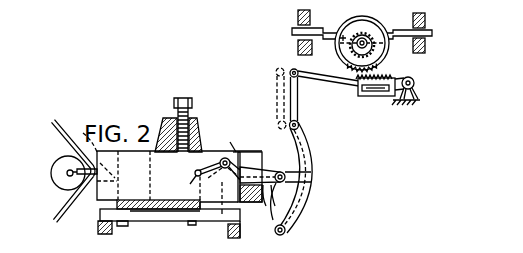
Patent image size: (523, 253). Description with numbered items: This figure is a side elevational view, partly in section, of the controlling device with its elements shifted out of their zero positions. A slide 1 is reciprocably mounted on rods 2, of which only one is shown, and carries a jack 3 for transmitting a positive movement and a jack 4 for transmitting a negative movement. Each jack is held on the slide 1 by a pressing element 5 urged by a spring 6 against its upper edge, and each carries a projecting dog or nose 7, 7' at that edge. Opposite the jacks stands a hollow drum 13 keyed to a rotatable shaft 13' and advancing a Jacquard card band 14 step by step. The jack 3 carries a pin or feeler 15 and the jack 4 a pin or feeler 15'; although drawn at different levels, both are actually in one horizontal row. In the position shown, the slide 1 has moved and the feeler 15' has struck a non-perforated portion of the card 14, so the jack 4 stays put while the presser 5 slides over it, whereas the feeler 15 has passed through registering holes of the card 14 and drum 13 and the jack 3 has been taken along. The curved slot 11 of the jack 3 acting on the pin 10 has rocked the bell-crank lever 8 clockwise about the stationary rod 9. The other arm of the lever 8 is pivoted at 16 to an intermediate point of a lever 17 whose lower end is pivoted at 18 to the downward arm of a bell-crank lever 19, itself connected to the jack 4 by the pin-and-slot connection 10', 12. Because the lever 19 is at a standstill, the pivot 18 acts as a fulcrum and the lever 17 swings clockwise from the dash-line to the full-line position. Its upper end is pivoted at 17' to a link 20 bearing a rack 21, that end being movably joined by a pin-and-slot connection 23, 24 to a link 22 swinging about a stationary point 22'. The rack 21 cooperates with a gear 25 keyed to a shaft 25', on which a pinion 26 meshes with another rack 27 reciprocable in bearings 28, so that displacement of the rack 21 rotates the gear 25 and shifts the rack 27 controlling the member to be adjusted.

The slide 1 is at (147, 216).
The rod 2 is at (135, 222).
The jack 3 is at (112, 155).
The jack 4 is at (247, 151).
The pressing element 5 is at (156, 144).
The spring 6 is at (172, 132).
The dog or nose 7 is at (219, 142).
The dog or nose 7' is at (232, 126).
The bell-crank lever 8 is at (251, 162).
The rod 9 is at (300, 178).
The pin 10 is at (241, 132).
The pin 10' is at (209, 226).
The curved slot 11 is at (199, 176).
The curved slot 12 is at (264, 206).
The hollow drum 13 is at (54, 173).
The rotatable shaft 13' is at (60, 160).
The Jacquard card band 14 is at (58, 130).
The pin or feeler 15 is at (64, 198).
The pin or feeler 15' is at (81, 135).
The pivot 16 is at (299, 126).
The lever 17 is at (302, 150).
The pivot 17' is at (277, 59).
The pivot 18 is at (286, 231).
The bell-crank lever 19 is at (274, 214).
The link 20 is at (328, 80).
The rack 21 is at (386, 78).
The link 22 is at (418, 99).
The stationary point 22' is at (430, 87).
The pin-and-slot connection 23 is at (370, 92).
The pin-and-slot connection 24 is at (384, 96).
The gear 25 is at (353, 39).
The rotatable shaft 25' is at (376, 27).
The pinion 26 is at (368, 47).
The rack 27 is at (394, 32).
The bearings 28 is at (299, 18).